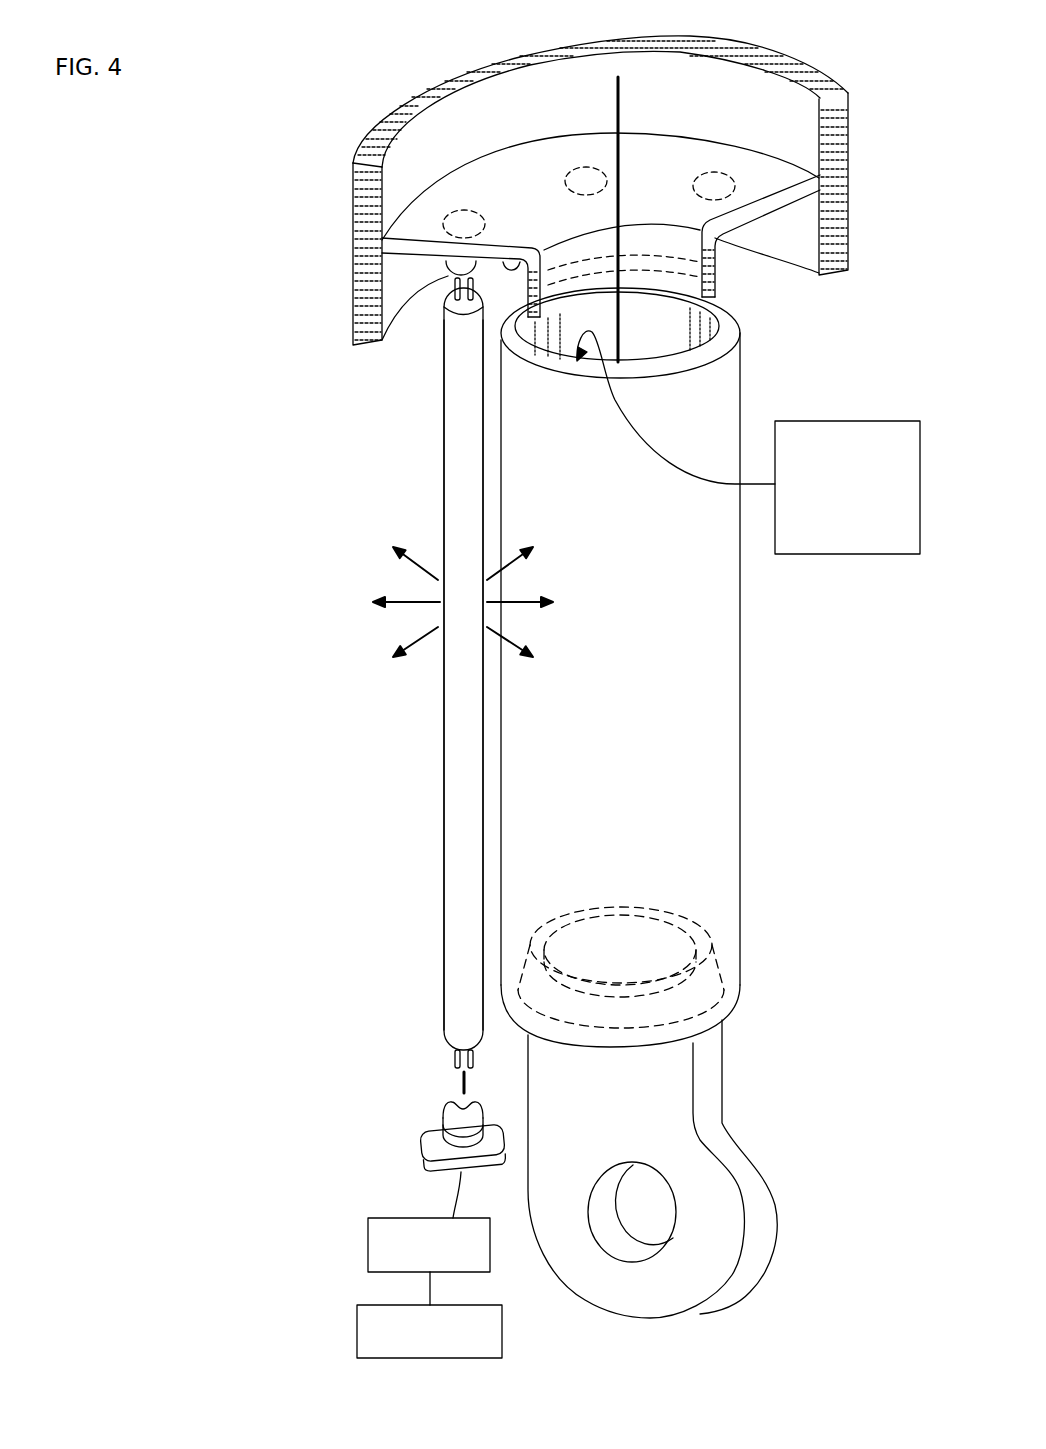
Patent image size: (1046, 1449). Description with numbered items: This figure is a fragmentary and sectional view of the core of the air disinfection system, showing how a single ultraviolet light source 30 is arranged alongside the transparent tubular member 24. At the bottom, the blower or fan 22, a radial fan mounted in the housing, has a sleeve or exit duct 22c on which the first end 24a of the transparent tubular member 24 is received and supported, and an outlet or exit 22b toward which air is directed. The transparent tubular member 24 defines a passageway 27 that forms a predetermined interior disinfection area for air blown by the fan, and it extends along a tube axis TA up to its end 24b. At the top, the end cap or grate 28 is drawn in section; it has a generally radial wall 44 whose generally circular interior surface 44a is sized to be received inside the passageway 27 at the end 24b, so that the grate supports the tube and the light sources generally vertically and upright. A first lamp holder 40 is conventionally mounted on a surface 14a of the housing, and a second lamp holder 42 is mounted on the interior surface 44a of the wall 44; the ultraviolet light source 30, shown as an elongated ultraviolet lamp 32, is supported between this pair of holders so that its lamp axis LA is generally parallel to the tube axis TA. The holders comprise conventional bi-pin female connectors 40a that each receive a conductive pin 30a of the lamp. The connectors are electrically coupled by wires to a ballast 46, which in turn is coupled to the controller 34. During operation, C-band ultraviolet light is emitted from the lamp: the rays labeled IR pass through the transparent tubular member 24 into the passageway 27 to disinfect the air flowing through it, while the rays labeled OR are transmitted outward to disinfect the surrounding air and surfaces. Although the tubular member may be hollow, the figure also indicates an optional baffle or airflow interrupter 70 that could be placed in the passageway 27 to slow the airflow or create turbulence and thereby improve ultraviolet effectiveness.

The surface of housing 14a is at (422, 1138).
The blower or fan 22 is at (643, 1312).
The outlet or exit 22b is at (680, 952).
The sleeve or exit duct 22c is at (677, 910).
The transparent tubular member 24 is at (740, 602).
The first end 24a is at (685, 1002).
The end 24b is at (700, 352).
The passageway 27 is at (705, 313).
The end cap or grate 28 is at (363, 327).
The ultraviolet light source 30 is at (453, 430).
The conductive pin 30a is at (447, 273).
The ultraviolet lamp 32 is at (453, 492).
The controller 34 is at (357, 1315).
The first lamp holder 40 is at (425, 1153).
The connector 40a is at (475, 1103).
The second lamp holder 42 is at (588, 169).
The generally radial wall 44 is at (485, 184).
The interior surface 44a is at (525, 256).
The ballast 46 is at (368, 1232).
The baffle or airflow interrupter 70 is at (887, 555).
The tube axis TA is at (710, 325).
The lamp axis LA is at (460, 1080).
The light rays OR is at (430, 570).
The light rays IR is at (495, 570).